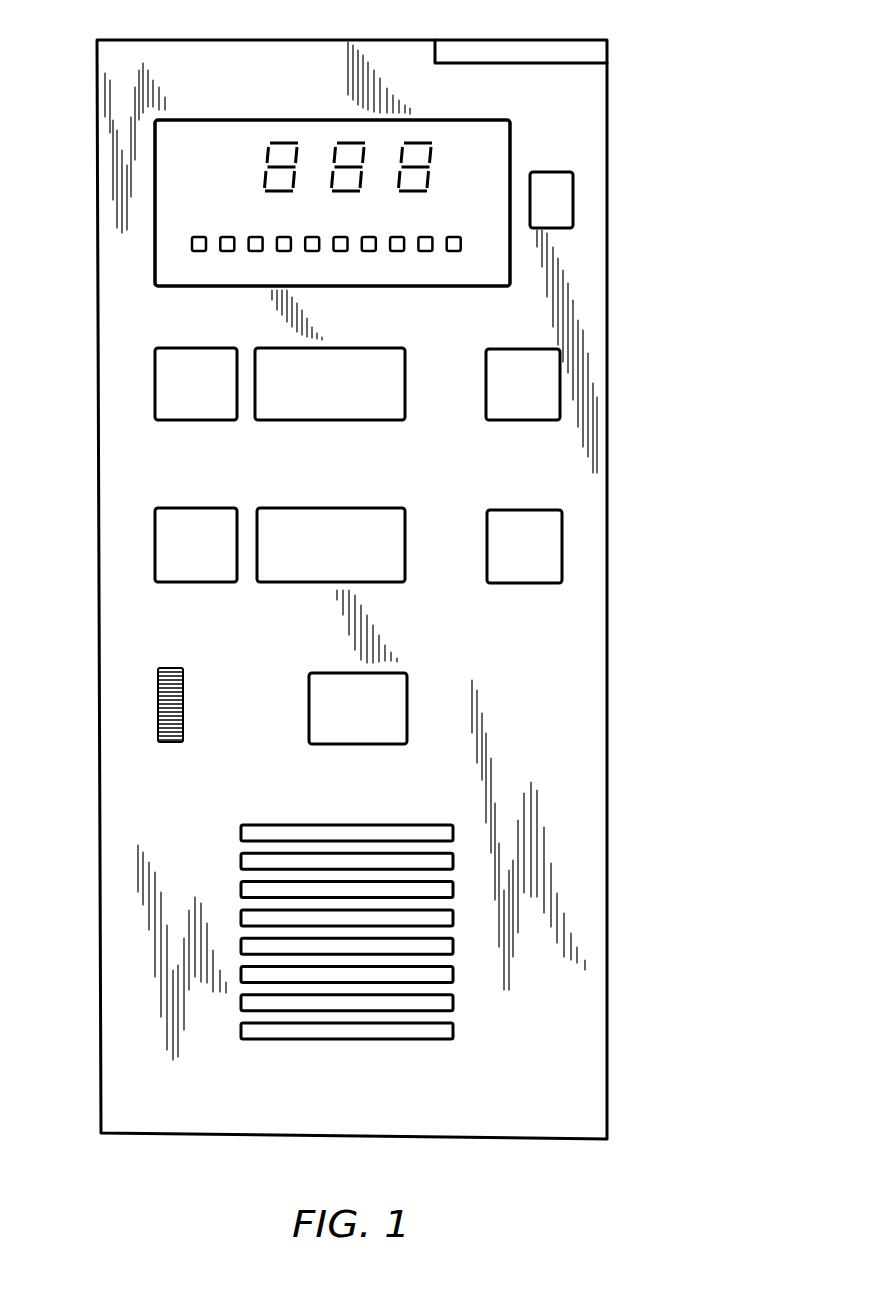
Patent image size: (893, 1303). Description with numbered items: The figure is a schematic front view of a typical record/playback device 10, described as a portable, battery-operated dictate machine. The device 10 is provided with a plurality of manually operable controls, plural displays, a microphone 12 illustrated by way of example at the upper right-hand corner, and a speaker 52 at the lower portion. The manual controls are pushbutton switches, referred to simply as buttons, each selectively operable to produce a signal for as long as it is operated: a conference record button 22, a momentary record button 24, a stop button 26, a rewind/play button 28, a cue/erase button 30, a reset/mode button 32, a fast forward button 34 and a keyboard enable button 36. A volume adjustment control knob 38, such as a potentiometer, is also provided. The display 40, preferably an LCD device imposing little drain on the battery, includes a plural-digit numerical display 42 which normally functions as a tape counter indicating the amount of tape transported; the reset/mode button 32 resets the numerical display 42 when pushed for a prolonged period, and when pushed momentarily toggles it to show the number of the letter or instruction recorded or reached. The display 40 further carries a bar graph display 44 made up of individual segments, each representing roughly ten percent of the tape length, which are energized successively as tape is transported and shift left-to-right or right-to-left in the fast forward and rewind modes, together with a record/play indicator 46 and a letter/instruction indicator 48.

The record/playback device 10 is at (634, 111).
The microphone 12 is at (522, 48).
The conference record button 22 is at (191, 352).
The momentary record button 24 is at (358, 358).
The stop button 26 is at (210, 517).
The rewind/play button 28 is at (335, 517).
The cue/erase button 30 is at (517, 353).
The reset/mode button 32 is at (570, 212).
The fast forward button 34 is at (537, 515).
The keyboard enable button 36 is at (399, 729).
The volume adjustment control knob 38 is at (183, 713).
The display 40 is at (154, 149).
The numerical display 42 is at (408, 141).
The bar graph display 44 is at (281, 237).
The record/play indicator 46 is at (180, 168).
The letter/instruction indicator 48 is at (495, 158).
The speaker 52 is at (242, 887).